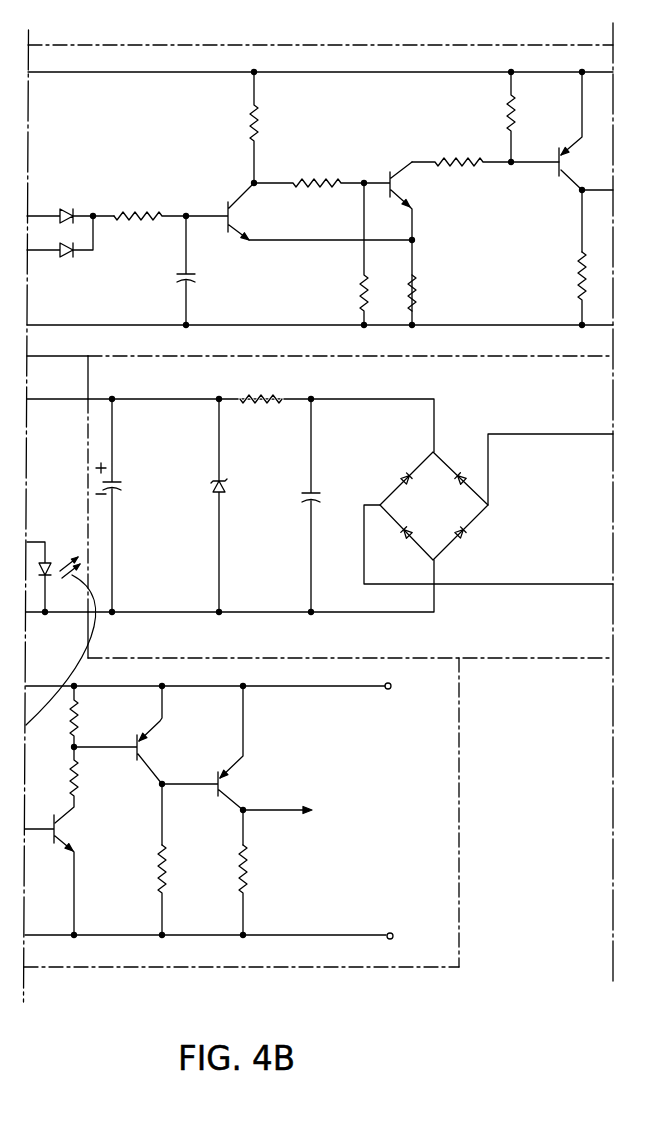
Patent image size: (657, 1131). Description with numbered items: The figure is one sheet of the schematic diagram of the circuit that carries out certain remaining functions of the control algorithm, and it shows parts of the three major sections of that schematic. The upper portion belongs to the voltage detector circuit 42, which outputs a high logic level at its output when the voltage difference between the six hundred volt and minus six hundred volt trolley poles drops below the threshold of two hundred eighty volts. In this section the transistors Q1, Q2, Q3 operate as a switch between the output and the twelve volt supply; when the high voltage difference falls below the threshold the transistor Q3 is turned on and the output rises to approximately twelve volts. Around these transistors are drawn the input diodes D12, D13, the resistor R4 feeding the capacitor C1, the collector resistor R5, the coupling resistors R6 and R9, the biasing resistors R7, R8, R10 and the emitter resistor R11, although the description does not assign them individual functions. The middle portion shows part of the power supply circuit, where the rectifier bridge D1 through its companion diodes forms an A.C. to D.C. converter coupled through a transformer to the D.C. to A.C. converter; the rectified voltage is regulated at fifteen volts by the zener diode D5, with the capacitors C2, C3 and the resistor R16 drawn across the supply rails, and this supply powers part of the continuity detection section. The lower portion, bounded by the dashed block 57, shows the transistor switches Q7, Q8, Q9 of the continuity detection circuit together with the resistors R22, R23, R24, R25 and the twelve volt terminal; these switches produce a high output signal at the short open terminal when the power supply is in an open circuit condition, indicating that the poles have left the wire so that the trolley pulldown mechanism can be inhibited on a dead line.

The voltage detector circuit 42 is at (195, 44).
The short/open detection circuit 57 is at (384, 768).
The resistor R4 is at (150, 204).
The resistor R5 is at (241, 127).
The resistor R6 is at (309, 172).
The resistor R7 is at (350, 254).
The resistor R8 is at (424, 293).
The resistor R9 is at (485, 151).
The resistor R10 is at (495, 117).
The resistor R11 is at (569, 288).
The resistor R16 is at (261, 389).
The resistor R22 is at (90, 716).
The resistor R23 is at (83, 785).
The resistor R24 is at (143, 890).
The resistor R25 is at (225, 890).
The transistor Q1 is at (299, 208).
The transistor Q2 is at (388, 240).
The transistor Q3 is at (576, 162).
The transistor switch Q7 is at (49, 864).
The transistor switch Q8 is at (118, 765).
The transistor switch Q9 is at (202, 765).
The capacitor C1 is at (191, 270).
The capacitor C2 is at (116, 505).
The capacitor C3 is at (322, 505).
The rectifier bridge D1 is at (488, 507).
The zener diode D5 is at (227, 505).
The diode D12 is at (70, 206).
The diode D13 is at (60, 248).